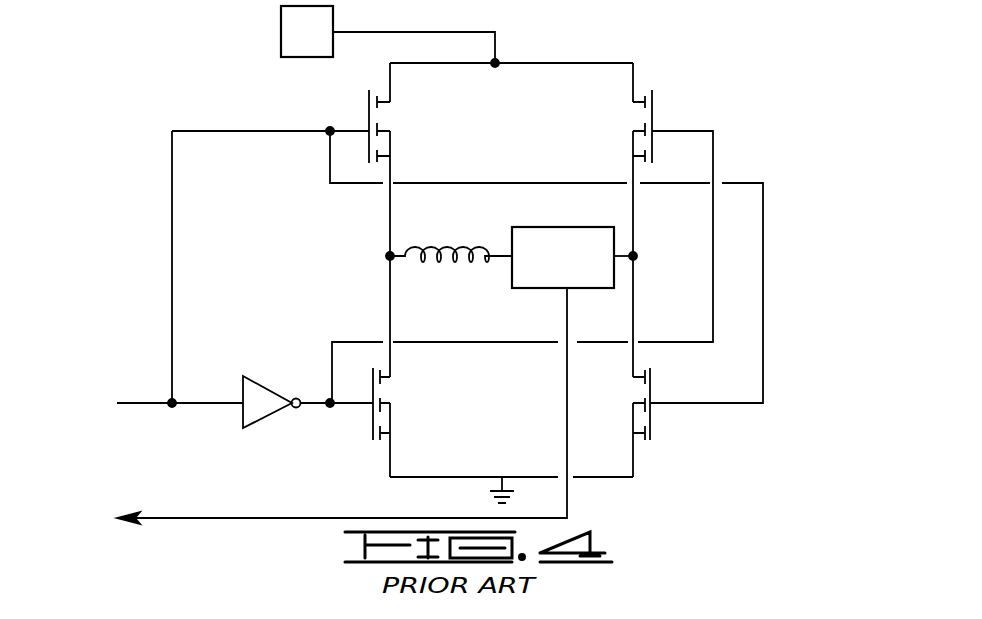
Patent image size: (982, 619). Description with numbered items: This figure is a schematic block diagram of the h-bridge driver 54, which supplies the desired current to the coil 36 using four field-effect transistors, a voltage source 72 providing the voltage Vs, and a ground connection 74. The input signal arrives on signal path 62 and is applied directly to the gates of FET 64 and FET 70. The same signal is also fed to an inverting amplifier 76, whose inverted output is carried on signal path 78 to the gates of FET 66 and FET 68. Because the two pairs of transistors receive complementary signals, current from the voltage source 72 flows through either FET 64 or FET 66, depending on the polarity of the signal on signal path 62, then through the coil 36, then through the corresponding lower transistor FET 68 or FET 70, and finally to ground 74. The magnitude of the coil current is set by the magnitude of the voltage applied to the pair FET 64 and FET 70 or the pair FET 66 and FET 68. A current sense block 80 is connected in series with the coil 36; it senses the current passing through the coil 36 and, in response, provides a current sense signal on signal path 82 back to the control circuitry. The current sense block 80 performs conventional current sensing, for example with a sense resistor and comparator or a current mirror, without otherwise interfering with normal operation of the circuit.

The h-bridge driver 54 is at (602, 53).
The voltage source 72 is at (281, 31).
The FET 64 is at (369, 115).
The FET 66 is at (652, 117).
The FET 68 is at (373, 432).
The FET 70 is at (652, 418).
The coil 36 is at (432, 248).
The current sense block 80 is at (548, 227).
The signal path 62 is at (147, 403).
The inverting amplifier 76 is at (250, 378).
The signal path 78 is at (310, 405).
The ground connection 74 is at (497, 483).
The signal path 82 is at (225, 517).